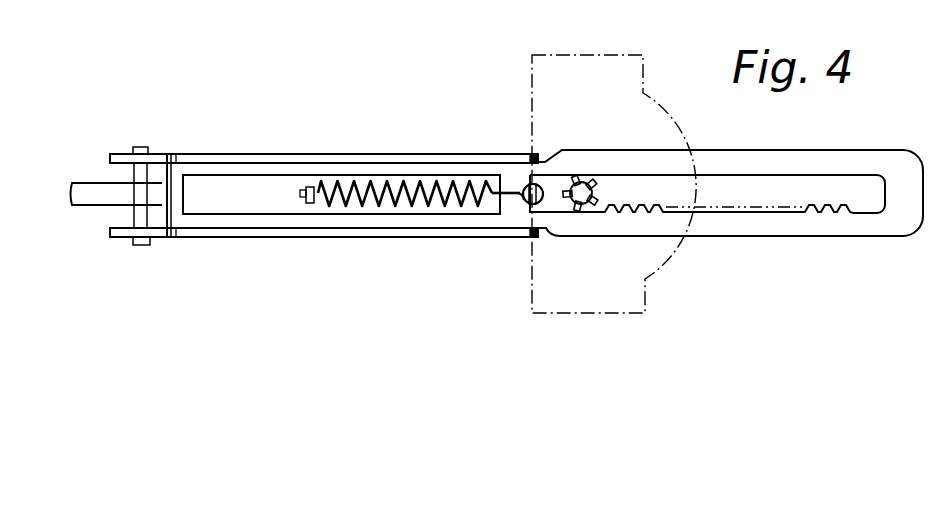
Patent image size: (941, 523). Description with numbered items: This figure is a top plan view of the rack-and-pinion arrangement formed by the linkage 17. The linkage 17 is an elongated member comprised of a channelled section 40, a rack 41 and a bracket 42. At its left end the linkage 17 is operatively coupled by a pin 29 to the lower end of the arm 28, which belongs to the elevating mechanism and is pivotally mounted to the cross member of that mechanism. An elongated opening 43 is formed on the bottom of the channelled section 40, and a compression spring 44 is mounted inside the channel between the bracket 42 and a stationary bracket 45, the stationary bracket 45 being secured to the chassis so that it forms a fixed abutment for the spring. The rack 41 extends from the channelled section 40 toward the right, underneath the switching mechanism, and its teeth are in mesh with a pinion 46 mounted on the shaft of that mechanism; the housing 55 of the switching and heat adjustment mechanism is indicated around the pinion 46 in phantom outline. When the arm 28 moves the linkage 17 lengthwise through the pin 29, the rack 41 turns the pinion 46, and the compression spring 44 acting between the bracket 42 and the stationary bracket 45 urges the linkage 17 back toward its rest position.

The linkage 17 is at (465, 130).
The arm 28 is at (77, 183).
The pin 29 is at (140, 246).
The channelled section 40 is at (300, 237).
The rack 41 is at (760, 237).
The bracket 42 is at (534, 183).
The elongated opening 43 is at (259, 176).
The compression spring 44 is at (397, 212).
The stationary bracket 45 is at (311, 205).
The pinion 46 is at (586, 186).
The housing 55 is at (612, 55).